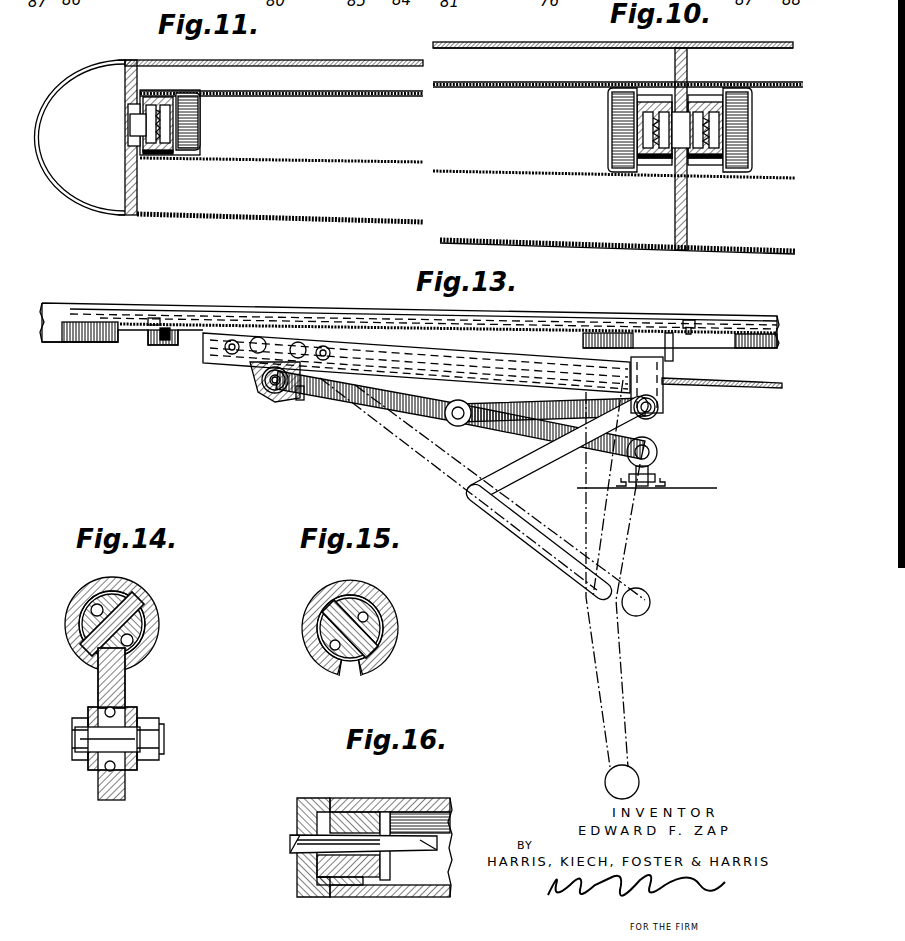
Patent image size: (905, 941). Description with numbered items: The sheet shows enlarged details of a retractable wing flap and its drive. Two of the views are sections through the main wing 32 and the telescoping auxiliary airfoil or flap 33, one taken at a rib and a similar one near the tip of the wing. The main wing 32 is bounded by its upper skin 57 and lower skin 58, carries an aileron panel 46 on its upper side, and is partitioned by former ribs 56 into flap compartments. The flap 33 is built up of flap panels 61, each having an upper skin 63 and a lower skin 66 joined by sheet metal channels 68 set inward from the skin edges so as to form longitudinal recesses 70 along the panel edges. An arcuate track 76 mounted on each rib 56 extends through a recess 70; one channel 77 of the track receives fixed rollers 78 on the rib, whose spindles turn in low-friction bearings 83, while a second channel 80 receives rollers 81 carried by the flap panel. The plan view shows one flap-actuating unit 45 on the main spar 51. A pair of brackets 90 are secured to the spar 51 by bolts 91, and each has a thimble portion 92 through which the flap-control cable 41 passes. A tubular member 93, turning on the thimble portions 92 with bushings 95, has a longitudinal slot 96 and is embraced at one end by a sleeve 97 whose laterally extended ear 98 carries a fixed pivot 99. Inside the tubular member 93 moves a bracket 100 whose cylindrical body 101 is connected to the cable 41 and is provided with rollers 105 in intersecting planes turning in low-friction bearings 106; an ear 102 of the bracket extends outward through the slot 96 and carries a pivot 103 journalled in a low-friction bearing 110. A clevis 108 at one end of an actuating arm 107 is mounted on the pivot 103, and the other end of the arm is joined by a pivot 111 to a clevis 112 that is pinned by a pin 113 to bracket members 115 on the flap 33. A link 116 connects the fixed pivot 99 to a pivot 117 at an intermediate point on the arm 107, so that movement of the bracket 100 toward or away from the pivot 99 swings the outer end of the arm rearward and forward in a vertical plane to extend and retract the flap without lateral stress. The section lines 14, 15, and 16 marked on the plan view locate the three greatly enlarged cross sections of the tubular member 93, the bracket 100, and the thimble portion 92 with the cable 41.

In FIG. 13, the section line 14— 14 is at (258, 337).
In FIG. 13, the section line 15— 15 is at (298, 342).
In FIG. 13, the section line 16— 16 is at (165, 347).
In FIG. 11, the main wing 32 is at (134, 58).
In FIG. 10, the main wing 32 is at (506, 36).
In FIG. 11, the flap 33 is at (340, 77).
In FIG. 10, the flap 33 is at (537, 77).
In FIG. 13, the flap 33 is at (575, 482).
In FIG. 13, the cable 41 is at (128, 343).
In FIG. 16, the cable 41 is at (278, 838).
In FIG. 13, the flap-actuating unit 45 is at (399, 475).
In FIG. 11, the aileron panel 46 is at (284, 60).
In FIG. 10, the aileron panel 46 is at (585, 42).
In FIG. 13, the main spar 51 is at (93, 313).
In FIG. 11, the former rib 56 is at (140, 210).
In FIG. 10, the former rib 56 is at (689, 236).
In FIG. 10, the upper skin 57 is at (727, 42).
In FIG. 10, the lower skin 58 is at (750, 252).
In FIG. 11, the flap panel 61 is at (401, 79).
In FIG. 10, the flap panel 61 is at (483, 76).
In FIG. 11, the upper skin 63 is at (372, 97).
In FIG. 10, the upper skin 63 is at (583, 86).
In FIG. 11, the lower skin 66 is at (352, 163).
In FIG. 10, the lower skin 66 is at (513, 173).
In FIG. 11, the sheet metal channel 68 is at (203, 108).
In FIG. 10, the sheet metal channel 68 is at (610, 104).
In FIG. 11, the longitudinal recess 70 is at (144, 92).
In FIG. 10, the longitudinal recess 70 is at (650, 97).
In FIG. 11, the arcuate track 76 is at (168, 156).
In FIG. 10, the arcuate track 76 is at (650, 160).
In FIG. 11, the channel 77 is at (147, 156).
In FIG. 10, the channel 77 is at (663, 160).
In FIG. 11, the fixed roller 78 is at (150, 125).
In FIG. 10, the fixed roller 78 is at (667, 112).
In FIG. 10, the second channel 80 is at (648, 125).
In FIG. 11, the roller 81 is at (170, 128).
In FIG. 10, the roller 81 is at (640, 140).
In FIG. 11, the low-friction bearing 83 is at (130, 110).
In FIG. 13, the bracket 90 is at (173, 330).
In FIG. 16, the bracket 90 is at (297, 890).
In FIG. 13, the bolt 91 is at (152, 318).
In FIG. 13, the thimble portion 92 is at (195, 325).
In FIG. 16, the thimble portion 92 is at (347, 818).
In FIG. 13, the tubular member 93 is at (535, 355).
In FIG. 14, the tubular member 93 is at (72, 626).
In FIG. 15, the tubular member 93 is at (330, 600).
In FIG. 16, the tubular member 93 is at (425, 797).
In FIG. 16, the bushing 95 is at (365, 898).
In FIG. 14, the longitudinal slot 96 is at (98, 672).
In FIG. 15, the longitudinal slot 96 is at (345, 674).
In FIG. 13, the sleeve 97 is at (640, 357).
In FIG. 13, the ear 98 is at (663, 408).
In FIG. 13, the pivot 99 is at (656, 424).
In FIG. 13, the bracket 100 is at (235, 372).
In FIG. 14, the bracket 100 is at (150, 683).
In FIG. 14, the cylindrical body 101 is at (135, 584).
In FIG. 15, the cylindrical body 101 is at (398, 640).
In FIG. 13, the ear 102 is at (262, 376).
In FIG. 14, the ear 102 is at (128, 790).
In FIG. 13, the pivot 103 is at (268, 392).
In FIG. 14, the pivot 103 is at (100, 737).
In FIG. 13, the roller 105 is at (278, 330).
In FIG. 14, the roller 105 is at (84, 598).
In FIG. 15, the roller 105 is at (385, 606).
In FIG. 14, the low-friction bearing 106 is at (150, 640).
In FIG. 15, the low-friction bearing 106 is at (320, 640).
In FIG. 13, the actuating arm 107 is at (368, 404).
In FIG. 13, the clevis 108 is at (300, 398).
In FIG. 14, the clevis 108 is at (90, 708).
In FIG. 14, the low-friction bearing 110 is at (100, 773).
In FIG. 13, the pivot 111 is at (660, 452).
In FIG. 13, the clevis 112 is at (643, 495).
In FIG. 13, the pin 113 is at (658, 476).
In FIG. 13, the bracket member 115 is at (620, 486).
In FIG. 13, the link 116 is at (530, 426).
In FIG. 13, the pivot 117 is at (455, 432).